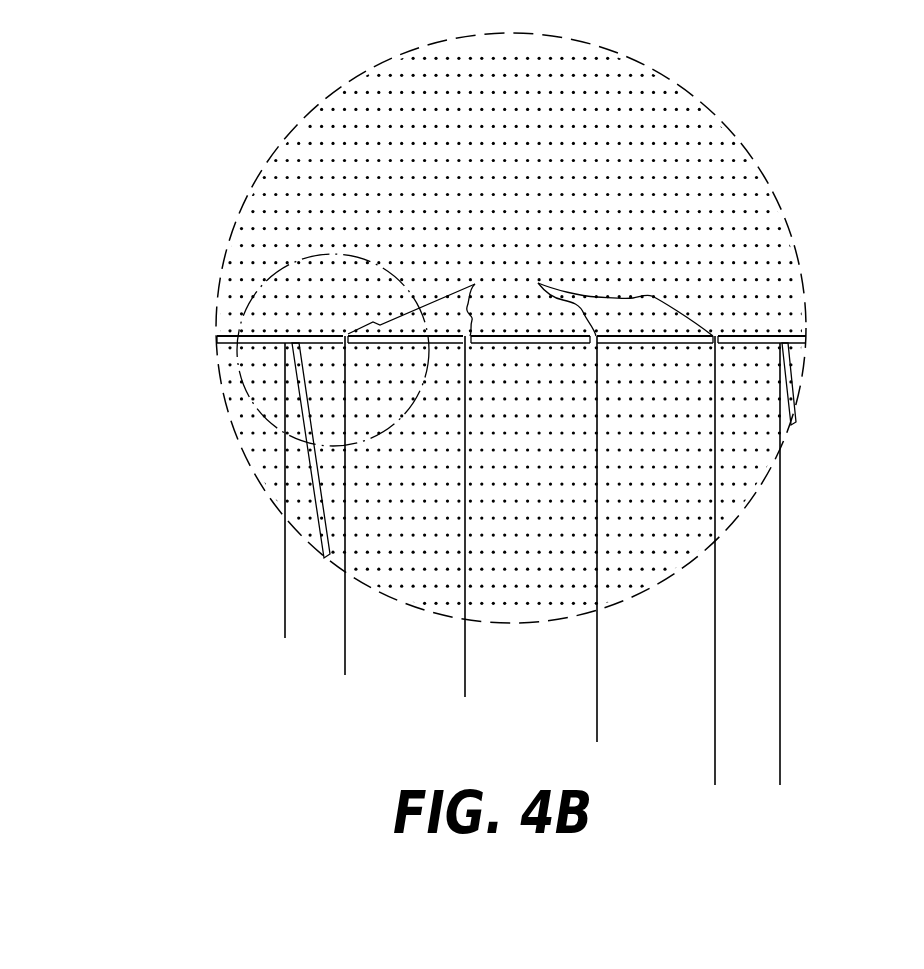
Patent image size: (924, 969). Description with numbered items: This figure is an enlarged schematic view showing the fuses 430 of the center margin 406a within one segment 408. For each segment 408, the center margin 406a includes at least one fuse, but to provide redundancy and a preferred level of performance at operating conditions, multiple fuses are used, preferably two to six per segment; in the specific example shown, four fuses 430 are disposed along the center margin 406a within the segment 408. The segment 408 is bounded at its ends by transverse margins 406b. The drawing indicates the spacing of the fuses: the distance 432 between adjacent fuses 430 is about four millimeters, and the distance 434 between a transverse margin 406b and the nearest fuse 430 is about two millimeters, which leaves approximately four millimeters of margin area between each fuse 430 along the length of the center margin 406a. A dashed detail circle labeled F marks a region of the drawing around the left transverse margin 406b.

The detail region F is at (271, 293).
The segment 408 is at (513, 503).
The center margin 406a is at (750, 334).
The transverse margins 406b is at (292, 484).
The fuses 430 is at (530, 299).
The distance between the fuses 432 is at (307, 667).
The distance between transverse margins and the nearest fuses 434 is at (383, 628).